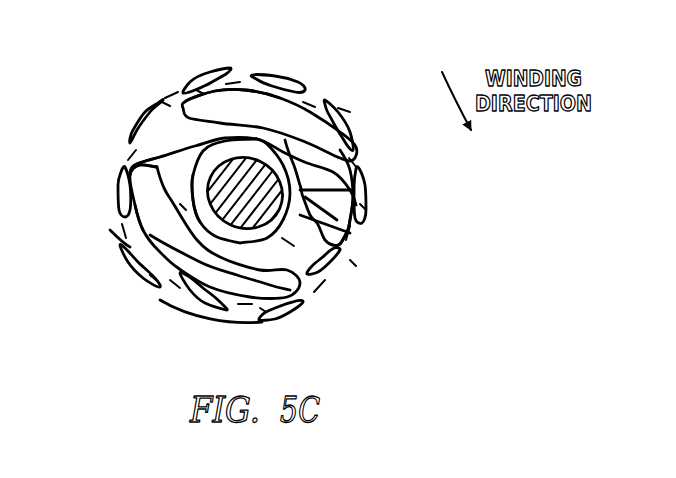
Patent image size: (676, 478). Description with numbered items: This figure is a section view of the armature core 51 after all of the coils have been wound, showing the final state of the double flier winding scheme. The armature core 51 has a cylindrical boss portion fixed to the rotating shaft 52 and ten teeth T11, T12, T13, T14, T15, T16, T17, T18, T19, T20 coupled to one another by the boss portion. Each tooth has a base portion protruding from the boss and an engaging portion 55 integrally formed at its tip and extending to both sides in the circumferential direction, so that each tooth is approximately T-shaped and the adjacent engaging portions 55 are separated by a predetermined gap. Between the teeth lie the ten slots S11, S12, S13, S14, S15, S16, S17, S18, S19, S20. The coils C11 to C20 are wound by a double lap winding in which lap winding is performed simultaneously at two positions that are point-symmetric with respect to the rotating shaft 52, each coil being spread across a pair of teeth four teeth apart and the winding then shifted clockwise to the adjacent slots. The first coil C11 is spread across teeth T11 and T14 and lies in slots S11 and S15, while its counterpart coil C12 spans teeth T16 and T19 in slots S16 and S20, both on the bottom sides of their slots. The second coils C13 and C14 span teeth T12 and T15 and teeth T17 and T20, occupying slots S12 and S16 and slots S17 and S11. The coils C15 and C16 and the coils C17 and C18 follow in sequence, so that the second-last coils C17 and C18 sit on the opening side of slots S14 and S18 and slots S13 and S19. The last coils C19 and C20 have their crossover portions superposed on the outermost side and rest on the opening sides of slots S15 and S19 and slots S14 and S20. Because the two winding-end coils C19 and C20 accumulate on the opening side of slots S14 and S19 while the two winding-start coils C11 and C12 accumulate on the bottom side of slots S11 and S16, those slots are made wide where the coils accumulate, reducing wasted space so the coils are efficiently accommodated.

The tooth T11 is at (303, 82).
The tooth T12 is at (354, 118).
The tooth T13 is at (369, 185).
The tooth T14 is at (341, 281).
The tooth T15 is at (292, 314).
The tooth T16 is at (213, 323).
The tooth T17 is at (139, 278).
The tooth T18 is at (112, 188).
The tooth T19 is at (139, 112).
The tooth T20 is at (207, 70).
The coil C11 is at (258, 158).
The coil C12 is at (205, 225).
The coil C13 is at (363, 170).
The coil C14 is at (130, 230).
The coil C15 is at (350, 225).
The coil C16 is at (163, 167).
The coil C17 is at (350, 250).
The coil C18 is at (133, 147).
The coil C19 is at (140, 243).
The coil C20 is at (338, 112).
The slot S11 is at (233, 80).
The slot S12 is at (310, 100).
The slot S13 is at (355, 163).
The slot S14 is at (353, 233).
The slot S15 is at (320, 287).
The slot S16 is at (245, 305).
The slot S17 is at (173, 283).
The slot S18 is at (123, 230).
The slot S19 is at (130, 157).
The slot S20 is at (170, 93).
The armature core 51 is at (345, 107).
The rotating shaft 52 is at (288, 242).
The engaging portion 55 is at (200, 92).